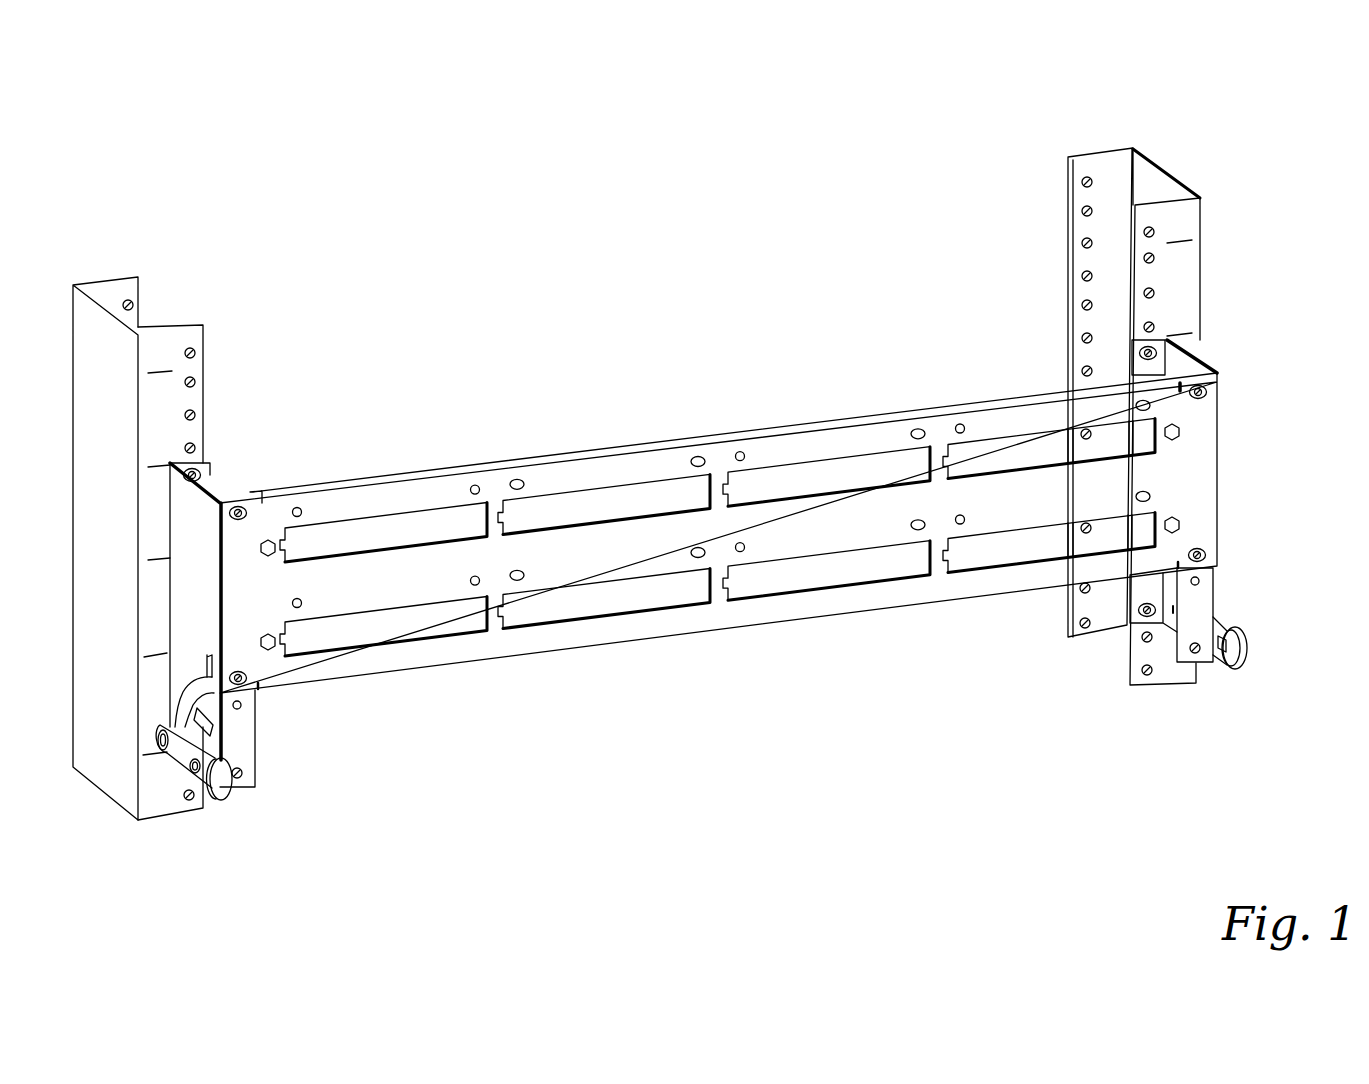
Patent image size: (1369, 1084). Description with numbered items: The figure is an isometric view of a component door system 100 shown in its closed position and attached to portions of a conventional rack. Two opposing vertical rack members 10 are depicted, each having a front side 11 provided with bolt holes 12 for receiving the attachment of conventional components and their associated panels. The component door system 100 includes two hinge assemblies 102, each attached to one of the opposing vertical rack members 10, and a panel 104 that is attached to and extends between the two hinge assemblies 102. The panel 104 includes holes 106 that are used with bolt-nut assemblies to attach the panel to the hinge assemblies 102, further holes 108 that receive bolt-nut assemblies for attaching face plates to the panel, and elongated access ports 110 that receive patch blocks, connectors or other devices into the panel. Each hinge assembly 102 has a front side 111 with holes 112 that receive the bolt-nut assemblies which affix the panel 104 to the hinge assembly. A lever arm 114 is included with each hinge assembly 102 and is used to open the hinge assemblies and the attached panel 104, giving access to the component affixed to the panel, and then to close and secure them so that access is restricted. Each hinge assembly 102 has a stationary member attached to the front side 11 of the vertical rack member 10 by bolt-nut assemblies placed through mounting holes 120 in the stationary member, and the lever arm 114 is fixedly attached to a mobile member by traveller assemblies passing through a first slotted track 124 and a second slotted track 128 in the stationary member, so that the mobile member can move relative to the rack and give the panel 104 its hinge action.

The component door system 100 is at (514, 182).
The vertical rack member 10 is at (97, 280).
The front side 11 is at (162, 352).
The rail mounting holes 12 is at (198, 353).
The hinge assembly 102 is at (193, 561).
The panel 104 is at (582, 450).
The holes 106 is at (246, 514).
The holes 108 is at (475, 485).
The elongated access ports 110 is at (862, 466).
The front side 111 is at (243, 740).
The holes 112 is at (241, 773).
The lever arm 114 is at (224, 801).
The mounting holes 120 is at (203, 473).
The first slotted track 124 is at (193, 689).
The second slotted track 128 is at (191, 718).